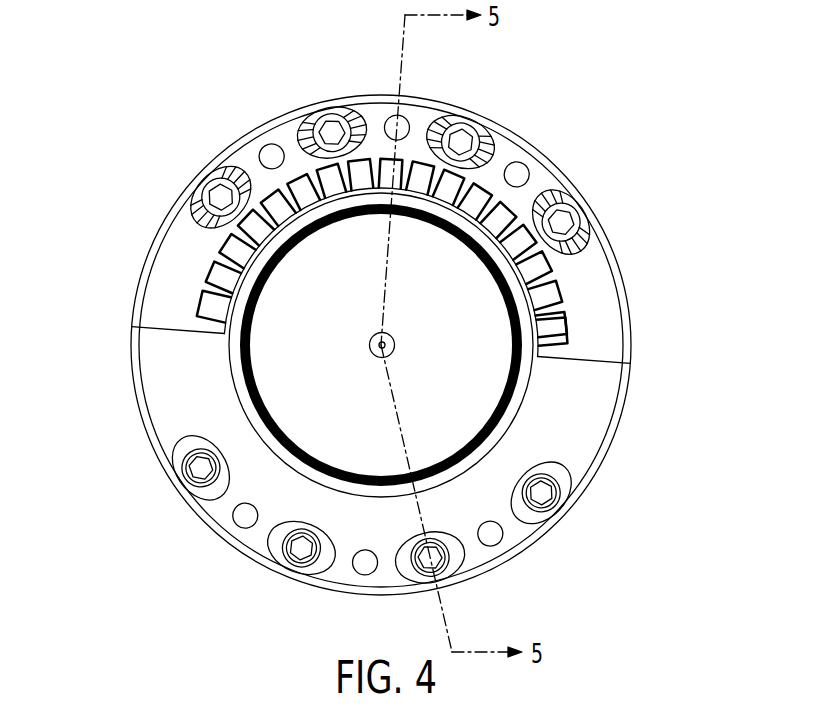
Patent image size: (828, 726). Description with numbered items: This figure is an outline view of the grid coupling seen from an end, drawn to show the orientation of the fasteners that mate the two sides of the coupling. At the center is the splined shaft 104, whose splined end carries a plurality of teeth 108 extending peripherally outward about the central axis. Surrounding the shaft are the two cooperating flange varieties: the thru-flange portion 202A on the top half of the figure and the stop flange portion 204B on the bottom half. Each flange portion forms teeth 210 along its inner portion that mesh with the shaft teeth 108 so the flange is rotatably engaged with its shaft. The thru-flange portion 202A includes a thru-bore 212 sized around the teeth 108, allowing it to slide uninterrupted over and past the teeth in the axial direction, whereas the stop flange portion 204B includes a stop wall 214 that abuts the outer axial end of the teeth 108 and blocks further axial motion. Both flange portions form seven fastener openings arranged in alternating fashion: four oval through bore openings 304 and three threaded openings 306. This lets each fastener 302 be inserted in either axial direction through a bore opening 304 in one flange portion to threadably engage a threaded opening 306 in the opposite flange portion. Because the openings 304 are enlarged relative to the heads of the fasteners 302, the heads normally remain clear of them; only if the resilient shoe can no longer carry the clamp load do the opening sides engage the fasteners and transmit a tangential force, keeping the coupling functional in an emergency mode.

The second splined shaft 104 is at (273, 351).
The teeth 108 is at (227, 262).
The thru-flange portion 202A is at (603, 281).
The stop flange portion 204B is at (605, 385).
The teeth 210 is at (566, 325).
The thru-bore 212 is at (566, 268).
The stop wall 214 is at (548, 376).
The fasteners 302 is at (222, 192).
The through bore openings 304 is at (491, 138).
The threaded openings 306 is at (277, 132).